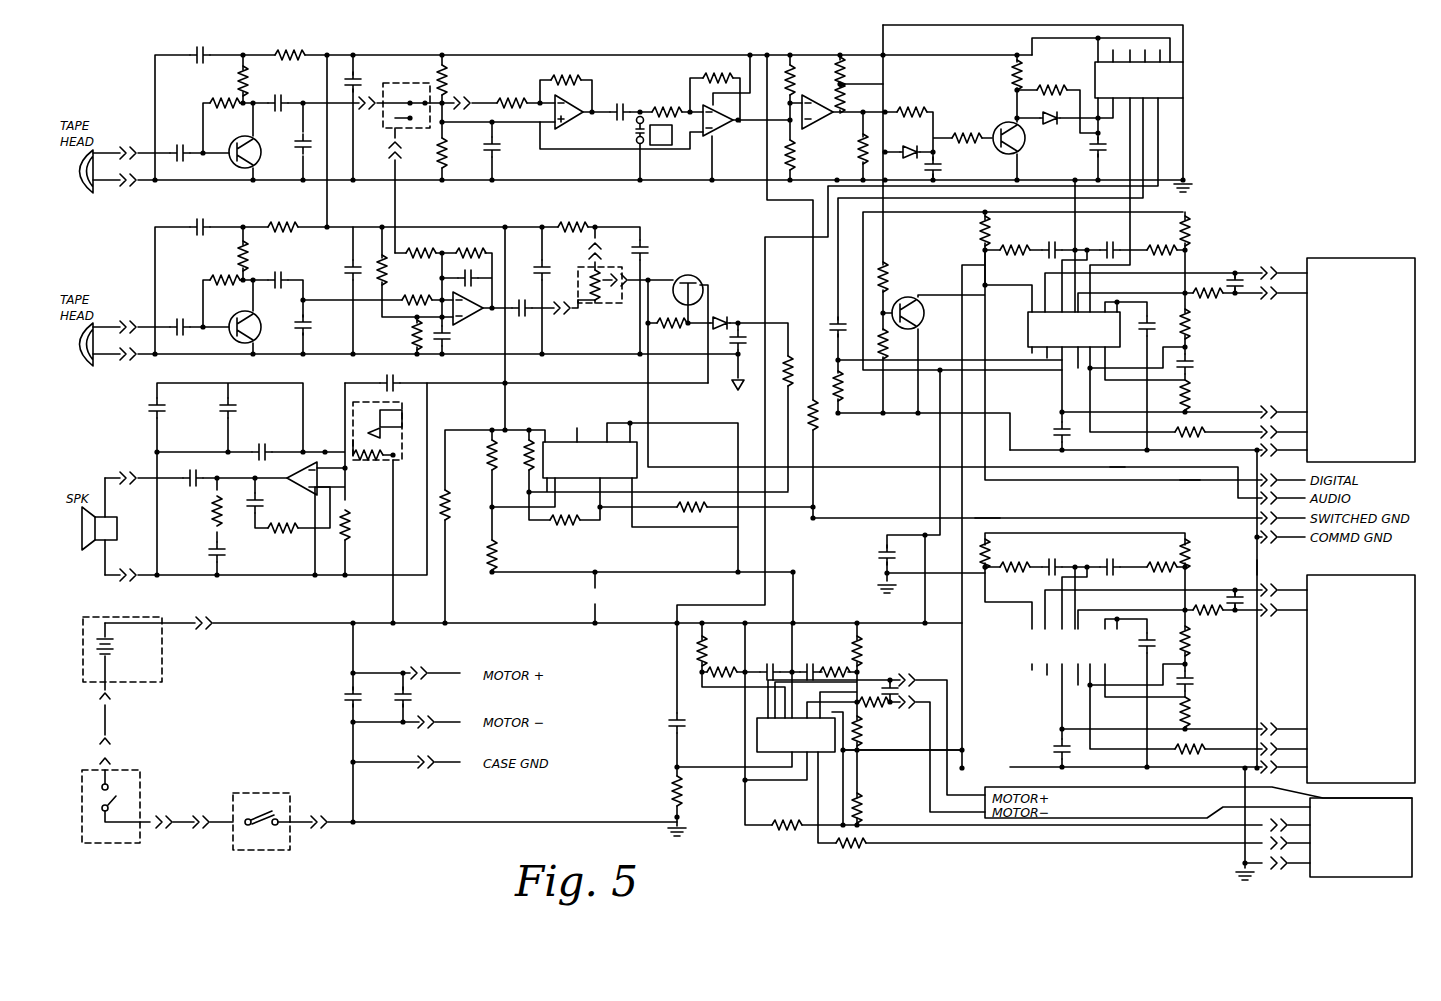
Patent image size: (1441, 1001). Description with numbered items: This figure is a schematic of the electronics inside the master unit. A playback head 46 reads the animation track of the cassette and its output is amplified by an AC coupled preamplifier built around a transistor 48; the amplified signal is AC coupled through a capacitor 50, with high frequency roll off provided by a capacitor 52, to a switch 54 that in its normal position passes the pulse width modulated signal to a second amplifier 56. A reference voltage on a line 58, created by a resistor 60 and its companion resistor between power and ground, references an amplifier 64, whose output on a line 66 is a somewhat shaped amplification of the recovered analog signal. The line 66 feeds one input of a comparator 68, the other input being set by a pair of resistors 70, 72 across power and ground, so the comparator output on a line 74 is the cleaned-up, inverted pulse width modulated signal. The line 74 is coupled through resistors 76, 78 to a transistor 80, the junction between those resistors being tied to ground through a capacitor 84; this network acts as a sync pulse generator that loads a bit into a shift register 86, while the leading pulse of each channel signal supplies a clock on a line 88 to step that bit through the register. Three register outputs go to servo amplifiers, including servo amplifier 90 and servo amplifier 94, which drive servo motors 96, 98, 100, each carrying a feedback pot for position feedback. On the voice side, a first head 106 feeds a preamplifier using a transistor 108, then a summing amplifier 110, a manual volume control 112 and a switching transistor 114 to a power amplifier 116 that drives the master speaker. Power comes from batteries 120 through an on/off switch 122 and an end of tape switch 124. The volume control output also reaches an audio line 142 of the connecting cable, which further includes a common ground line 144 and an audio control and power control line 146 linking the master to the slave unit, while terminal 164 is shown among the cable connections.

The playback head 46 is at (80, 193).
The transistor 48 is at (232, 140).
The capacitor 50 is at (282, 96).
The capacitor 52 is at (300, 160).
The switch 54 is at (400, 82).
The second amplifier 56 is at (575, 100).
The reference voltage line 58 is at (573, 150).
The resistor 60 is at (447, 72).
The amplifier 64 is at (722, 132).
The output line 66 is at (775, 110).
The comparator 68 is at (830, 104).
The resistor 70 is at (792, 78).
The resistor 72 is at (787, 165).
The output line 74 is at (890, 110).
The resistor 76 is at (925, 110).
The resistor 78 is at (968, 130).
The transistor 80 is at (1002, 125).
The capacitor 84 is at (945, 170).
The shift register 86 is at (1183, 80).
The clock line 88 is at (1150, 25).
The servo amplifier 90 is at (1028, 338).
The servo amplifier 94 is at (757, 738).
The servo motor 96 is at (1346, 258).
The servo motor 98 is at (1350, 575).
The servo motor 100 is at (1380, 878).
The first head 106 is at (80, 366).
The transistor 108 is at (232, 316).
The amplifier 110 is at (472, 318).
The manual volume control 112 is at (600, 262).
The switching transistor 114 is at (698, 277).
The power amplifier 116 is at (325, 490).
The batteries 120 is at (112, 650).
The on/off switch 122 is at (110, 800).
The end of tape switch 124 is at (262, 812).
The audio line 142 is at (1116, 468).
The common ground line 144 is at (1258, 566).
The audio control line 146 is at (985, 517).
The digital line 164 is at (1188, 481).